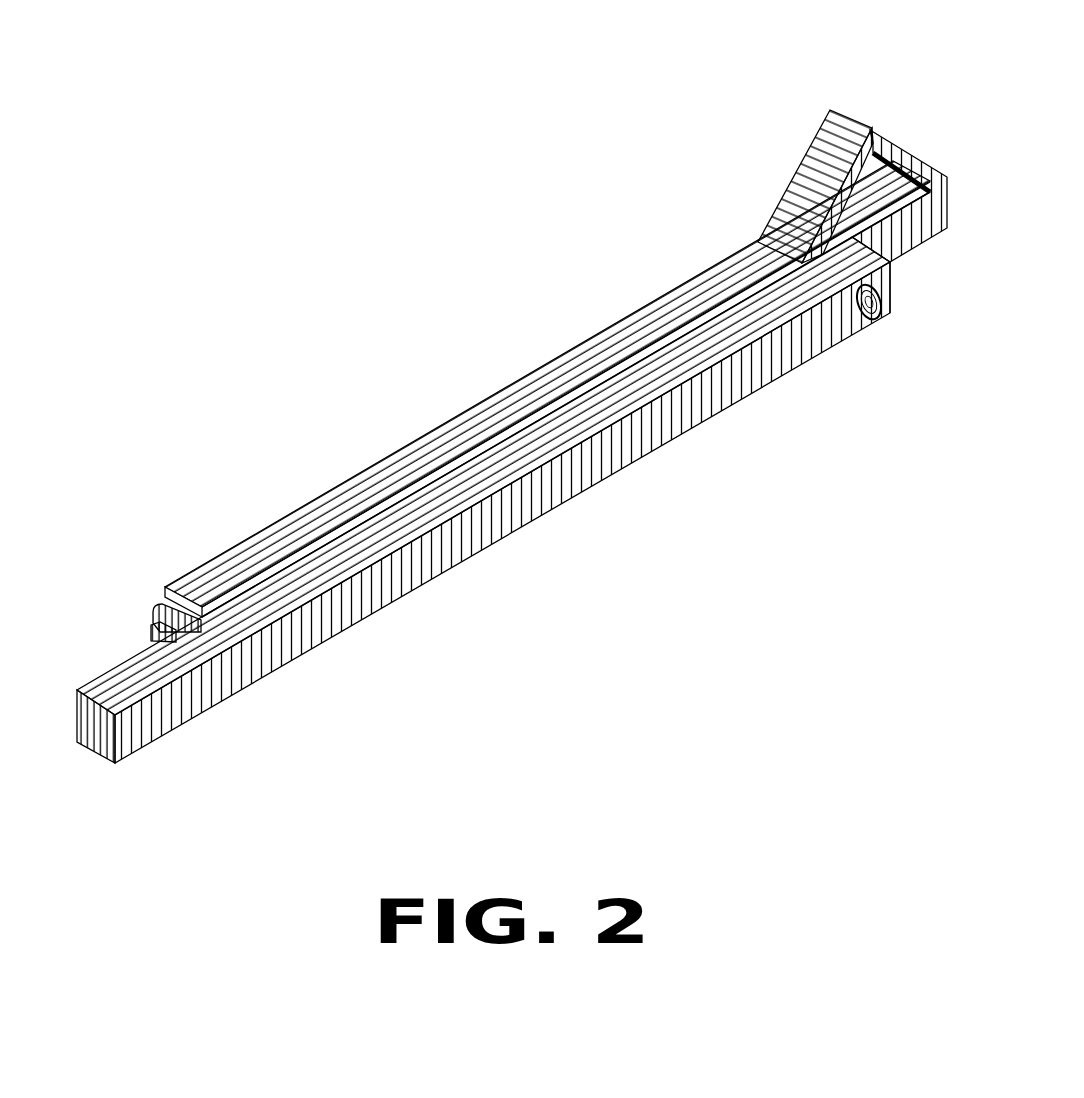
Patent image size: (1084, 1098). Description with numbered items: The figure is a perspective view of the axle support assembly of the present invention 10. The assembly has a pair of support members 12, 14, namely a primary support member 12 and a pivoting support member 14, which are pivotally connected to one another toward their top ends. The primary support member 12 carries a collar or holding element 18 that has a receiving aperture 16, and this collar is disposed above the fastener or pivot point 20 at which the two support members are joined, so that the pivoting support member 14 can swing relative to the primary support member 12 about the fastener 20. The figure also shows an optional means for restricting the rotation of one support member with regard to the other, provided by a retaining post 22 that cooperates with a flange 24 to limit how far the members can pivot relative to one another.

The axle support assembly 10 is at (245, 363).
The primary support member 12 is at (306, 527).
The pivoting support member 14 is at (503, 468).
The receiving aperture 16 is at (873, 200).
The collar or holding element 18 is at (832, 108).
The fastener or pivot point 20 is at (867, 282).
The retaining post 22 is at (165, 602).
The flange 24 is at (160, 628).